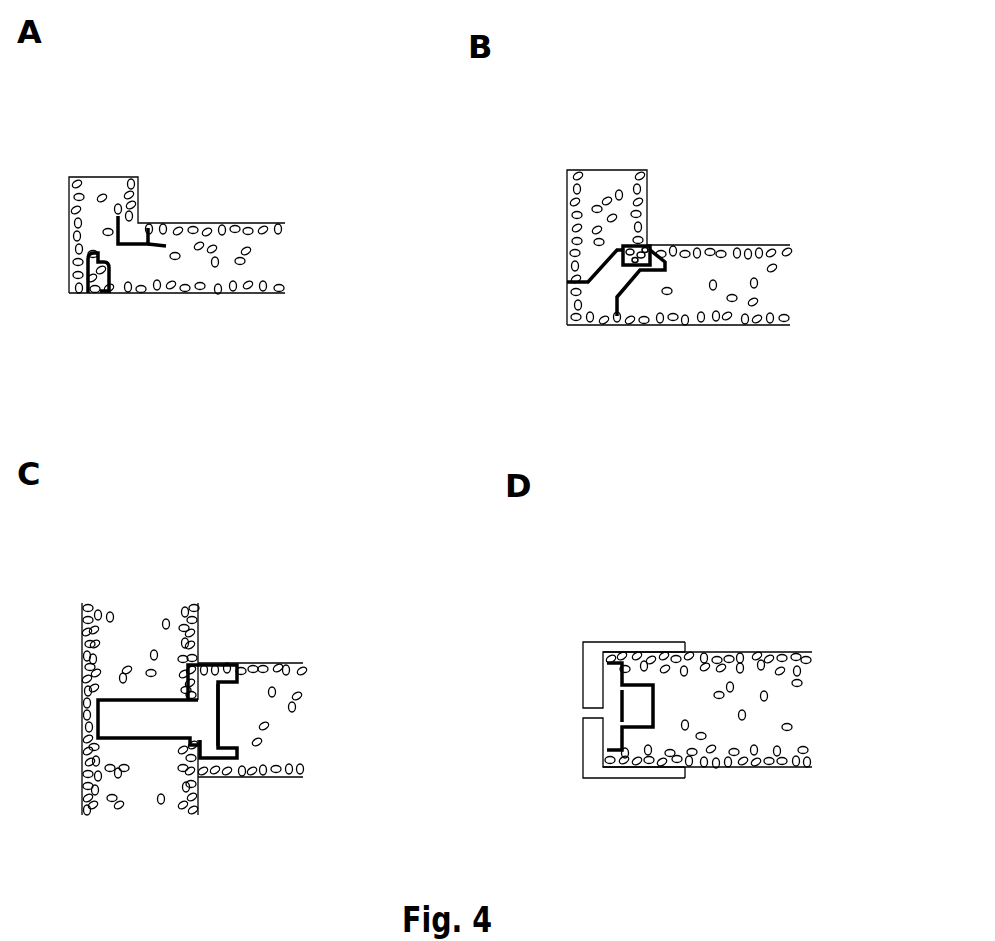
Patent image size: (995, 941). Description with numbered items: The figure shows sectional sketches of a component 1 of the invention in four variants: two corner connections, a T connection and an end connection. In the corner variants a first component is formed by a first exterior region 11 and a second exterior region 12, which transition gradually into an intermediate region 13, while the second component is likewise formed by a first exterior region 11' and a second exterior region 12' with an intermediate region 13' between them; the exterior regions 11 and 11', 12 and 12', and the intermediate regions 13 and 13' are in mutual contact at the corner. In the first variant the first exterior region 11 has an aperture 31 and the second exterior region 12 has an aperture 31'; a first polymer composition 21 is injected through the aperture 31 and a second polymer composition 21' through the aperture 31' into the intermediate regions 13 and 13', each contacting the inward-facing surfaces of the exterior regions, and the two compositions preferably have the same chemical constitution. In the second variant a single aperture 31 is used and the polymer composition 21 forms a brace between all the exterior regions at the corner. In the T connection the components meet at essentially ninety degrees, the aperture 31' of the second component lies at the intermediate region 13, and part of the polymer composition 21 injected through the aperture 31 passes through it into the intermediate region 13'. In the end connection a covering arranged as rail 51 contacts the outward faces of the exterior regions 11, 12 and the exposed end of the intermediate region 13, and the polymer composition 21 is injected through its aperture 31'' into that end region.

The component 1 is at (222, 142).
The first exterior region 11 is at (532, 463).
The second exterior region 12 is at (497, 531).
The intermediate region 13 is at (518, 495).
The first exterior region 11' is at (393, 442).
The second exterior region 12' is at (317, 442).
The intermediate region 13' is at (355, 454).
The first polymer composition 21 is at (428, 491).
The second polymer composition 21' is at (58, 266).
The aperture 31 is at (447, 467).
The aperture 31' is at (149, 518).
The aperture 31'' is at (583, 759).
The rail 51 is at (652, 770).